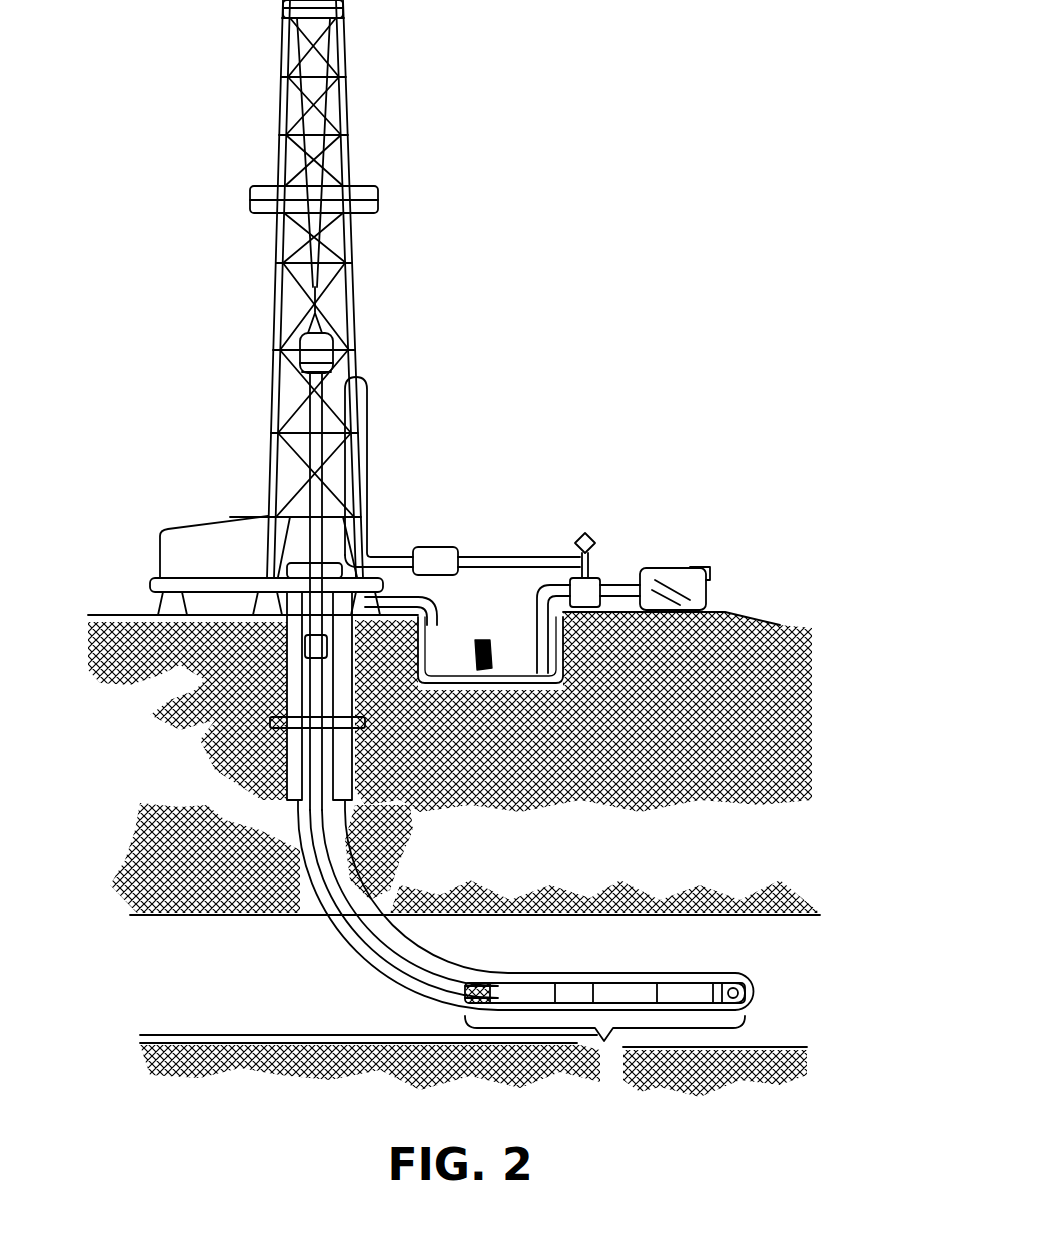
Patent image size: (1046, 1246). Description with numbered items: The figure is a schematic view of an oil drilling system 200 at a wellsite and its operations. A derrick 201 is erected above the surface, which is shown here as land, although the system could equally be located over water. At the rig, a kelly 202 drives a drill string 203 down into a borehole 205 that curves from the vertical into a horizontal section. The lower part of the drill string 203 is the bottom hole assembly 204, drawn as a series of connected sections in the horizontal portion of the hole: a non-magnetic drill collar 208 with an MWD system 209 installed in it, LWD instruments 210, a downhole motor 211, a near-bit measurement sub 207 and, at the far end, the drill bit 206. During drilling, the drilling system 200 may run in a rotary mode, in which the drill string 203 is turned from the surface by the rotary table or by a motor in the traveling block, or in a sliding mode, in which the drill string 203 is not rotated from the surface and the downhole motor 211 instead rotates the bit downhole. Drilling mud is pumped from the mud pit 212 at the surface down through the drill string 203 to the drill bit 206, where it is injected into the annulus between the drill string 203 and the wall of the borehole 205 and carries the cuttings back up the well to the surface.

The drilling system 200 is at (562, 240).
The derrick 201 is at (366, 368).
The kelly 202 is at (323, 500).
The drill string 203 is at (335, 917).
The bottom hole assembly 204 is at (605, 1030).
The borehole 205 is at (380, 917).
The drill bit 206 is at (735, 990).
The near-bit measurement sub 207 is at (670, 990).
The non-magnetic drill collar 208 is at (503, 990).
The MWD system 209 is at (538, 990).
The LWD instruments 210 is at (577, 990).
The downhole motor 211 is at (621, 990).
The mud pit 212 is at (503, 647).